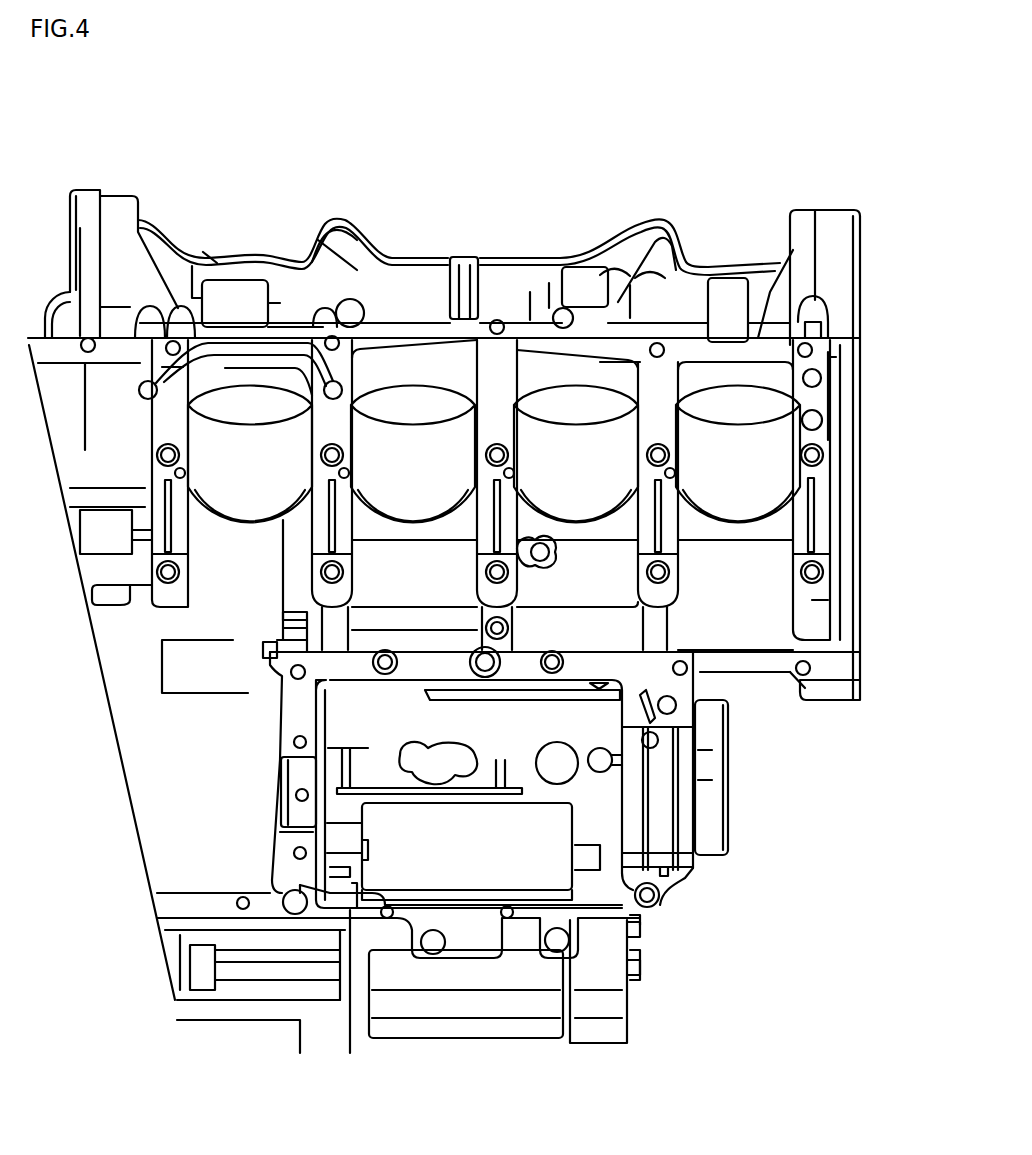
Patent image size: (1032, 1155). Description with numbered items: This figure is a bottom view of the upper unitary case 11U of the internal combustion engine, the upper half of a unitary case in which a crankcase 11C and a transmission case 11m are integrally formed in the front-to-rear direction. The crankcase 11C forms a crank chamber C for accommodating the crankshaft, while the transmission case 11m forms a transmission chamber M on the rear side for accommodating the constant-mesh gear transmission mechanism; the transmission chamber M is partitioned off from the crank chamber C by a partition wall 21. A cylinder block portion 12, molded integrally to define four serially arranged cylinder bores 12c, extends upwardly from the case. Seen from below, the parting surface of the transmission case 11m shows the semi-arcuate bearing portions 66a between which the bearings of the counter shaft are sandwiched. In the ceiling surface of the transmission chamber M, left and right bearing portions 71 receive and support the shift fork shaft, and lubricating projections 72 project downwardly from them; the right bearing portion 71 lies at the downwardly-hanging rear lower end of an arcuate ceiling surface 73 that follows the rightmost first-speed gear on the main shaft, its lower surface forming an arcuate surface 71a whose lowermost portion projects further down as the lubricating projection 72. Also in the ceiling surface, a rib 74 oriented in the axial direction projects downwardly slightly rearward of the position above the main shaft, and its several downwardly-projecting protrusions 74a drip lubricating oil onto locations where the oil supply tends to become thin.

The upper unitary case 11U is at (472, 232).
The crankcase 11C is at (842, 388).
The transmission case 11m is at (640, 955).
The cylinder block portion 12 is at (545, 285).
The cylinder bore 12c is at (269, 483).
The partition wall 21 is at (457, 640).
The crank chamber C is at (424, 582).
The transmission chamber M is at (474, 722).
The semi-arcuate bearing portion 66a is at (293, 776).
The bearing portion 71 is at (372, 868).
The arcuate surface 71a is at (300, 886).
The lubricating projection 72 is at (330, 882).
The arcuate ceiling surface 73 is at (335, 830).
The rib 74 is at (413, 788).
The protrusion 74a is at (346, 788).